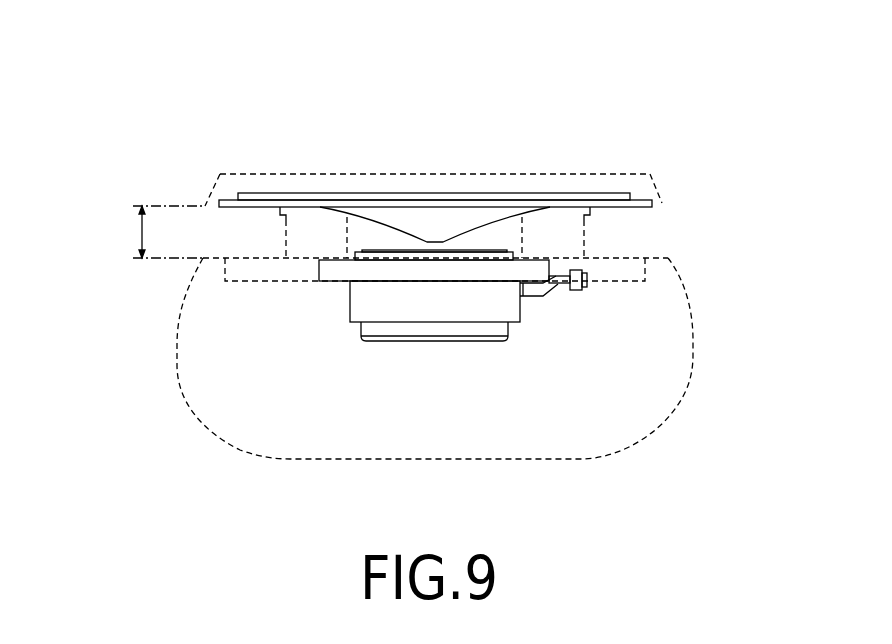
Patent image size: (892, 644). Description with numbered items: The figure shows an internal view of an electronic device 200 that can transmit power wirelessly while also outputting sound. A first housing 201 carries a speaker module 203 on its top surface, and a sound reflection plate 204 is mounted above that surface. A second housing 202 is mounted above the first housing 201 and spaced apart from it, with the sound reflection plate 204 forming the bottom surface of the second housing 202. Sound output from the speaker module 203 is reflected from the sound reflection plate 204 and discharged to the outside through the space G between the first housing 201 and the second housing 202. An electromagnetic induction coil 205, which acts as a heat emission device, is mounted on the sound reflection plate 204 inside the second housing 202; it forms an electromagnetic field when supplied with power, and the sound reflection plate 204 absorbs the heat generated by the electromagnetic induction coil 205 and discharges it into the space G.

The electronic device 200 is at (556, 98).
The first housing 201 is at (693, 344).
The second housing 202 is at (658, 190).
The speaker module 203 is at (349, 300).
The sound reflection plate 204 is at (490, 227).
The electromagnetic induction coil 205 is at (583, 193).
The space G is at (161, 232).